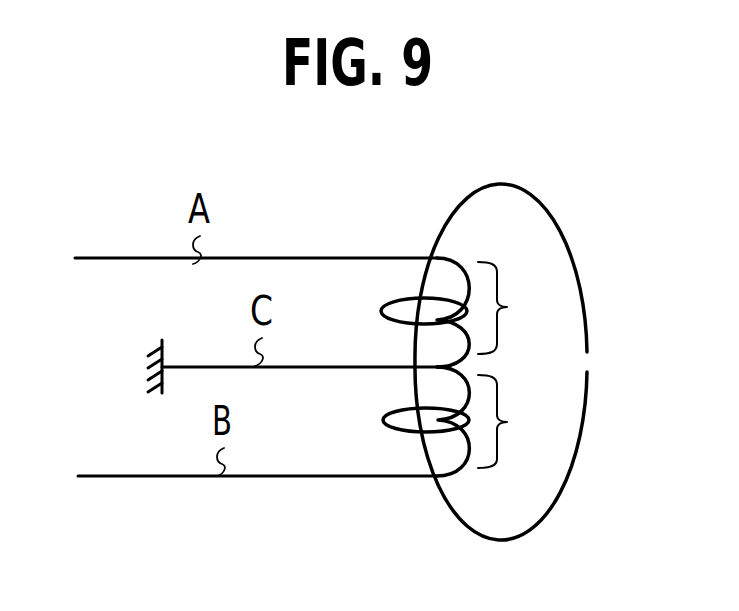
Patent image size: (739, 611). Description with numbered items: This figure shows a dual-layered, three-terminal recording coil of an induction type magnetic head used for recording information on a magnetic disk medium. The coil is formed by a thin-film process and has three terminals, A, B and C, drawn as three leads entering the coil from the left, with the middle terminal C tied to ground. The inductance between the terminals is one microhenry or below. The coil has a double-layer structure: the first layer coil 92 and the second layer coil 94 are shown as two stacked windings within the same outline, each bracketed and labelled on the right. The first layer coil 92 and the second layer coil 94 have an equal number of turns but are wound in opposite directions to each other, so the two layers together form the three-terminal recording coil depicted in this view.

The first layer coil 92 is at (507, 307).
The second layer coil 94 is at (507, 422).